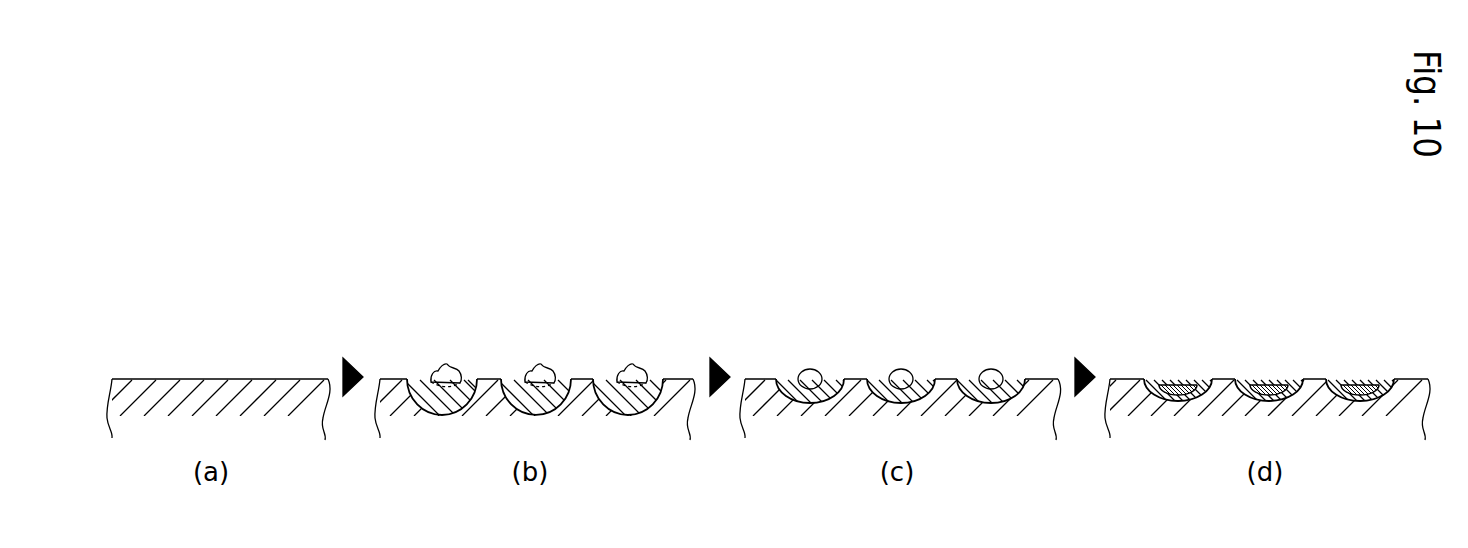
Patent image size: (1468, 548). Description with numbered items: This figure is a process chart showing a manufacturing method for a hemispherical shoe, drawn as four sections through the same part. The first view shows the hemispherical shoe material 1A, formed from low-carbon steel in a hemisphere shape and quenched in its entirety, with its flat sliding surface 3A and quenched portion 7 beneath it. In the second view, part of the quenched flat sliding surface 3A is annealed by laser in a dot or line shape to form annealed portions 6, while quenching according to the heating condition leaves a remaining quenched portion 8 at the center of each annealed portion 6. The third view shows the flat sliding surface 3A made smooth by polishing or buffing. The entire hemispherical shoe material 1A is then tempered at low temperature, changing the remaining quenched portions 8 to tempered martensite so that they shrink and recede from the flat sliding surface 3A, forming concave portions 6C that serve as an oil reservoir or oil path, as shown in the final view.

The hemispherical shoe material 1A is at (168, 378).
The quenched portion 7 is at (218, 379).
The flat sliding surface 3A is at (270, 378).
The annealed portion 6 is at (517, 377).
The remaining quenched portion 8 is at (443, 365).
The concave portion 6C is at (1362, 385).